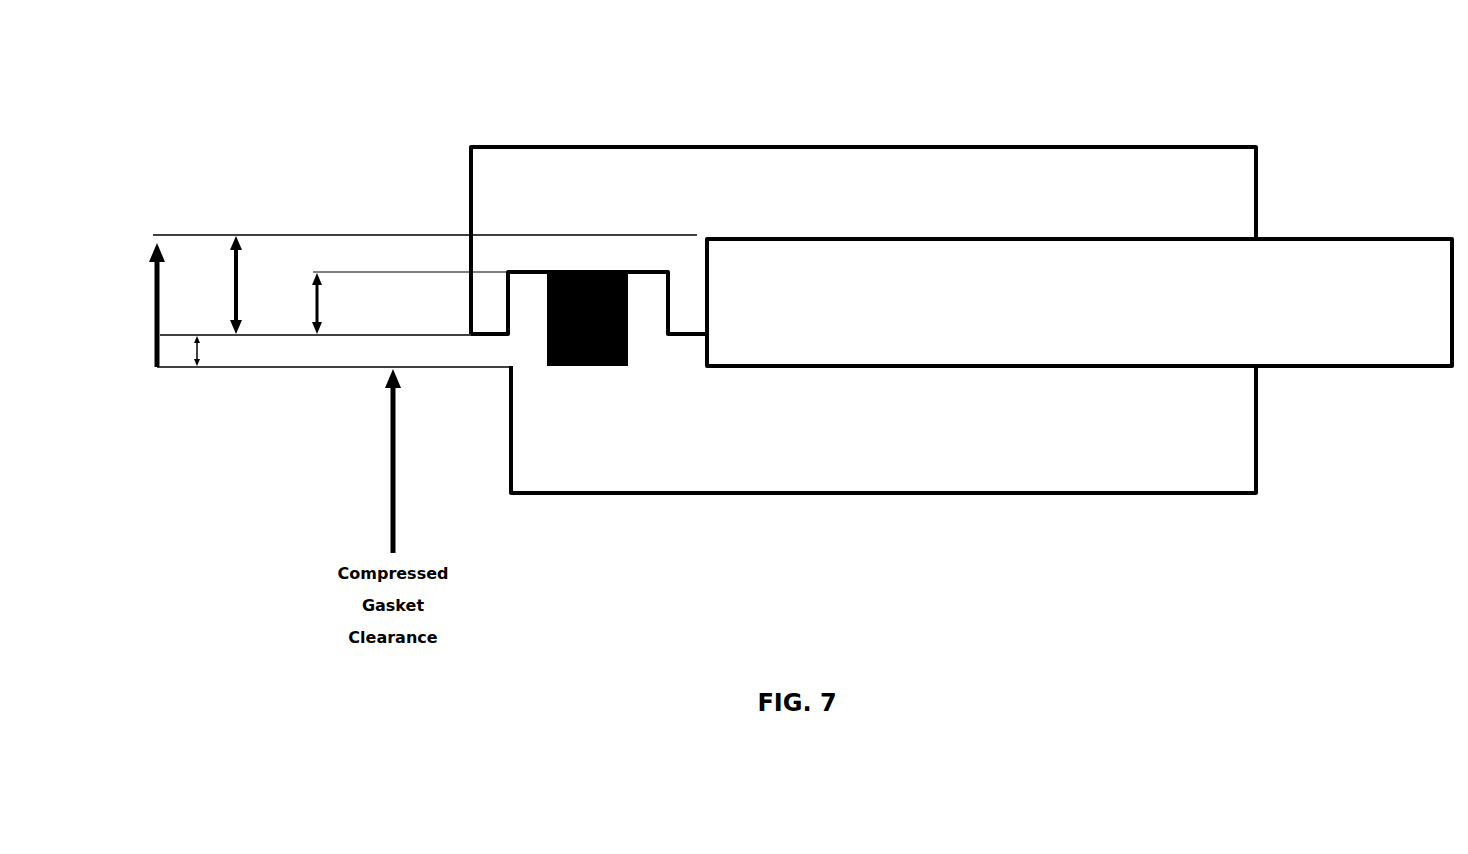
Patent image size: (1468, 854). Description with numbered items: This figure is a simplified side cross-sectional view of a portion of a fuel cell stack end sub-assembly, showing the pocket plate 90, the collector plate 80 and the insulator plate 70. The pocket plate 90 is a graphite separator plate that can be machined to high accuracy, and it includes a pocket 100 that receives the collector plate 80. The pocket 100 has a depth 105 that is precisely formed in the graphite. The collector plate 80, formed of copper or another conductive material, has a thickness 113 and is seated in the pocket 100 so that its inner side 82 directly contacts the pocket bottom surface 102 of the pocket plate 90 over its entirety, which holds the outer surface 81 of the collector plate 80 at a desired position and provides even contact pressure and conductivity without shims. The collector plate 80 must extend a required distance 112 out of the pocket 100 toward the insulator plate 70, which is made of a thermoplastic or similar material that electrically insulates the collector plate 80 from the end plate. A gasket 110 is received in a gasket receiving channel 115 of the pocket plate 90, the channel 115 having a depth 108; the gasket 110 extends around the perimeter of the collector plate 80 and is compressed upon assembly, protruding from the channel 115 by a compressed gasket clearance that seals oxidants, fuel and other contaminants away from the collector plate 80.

The insulator plate 70 is at (855, 452).
The collector plate 80 is at (1061, 322).
The outer surface of collector plate 81 is at (1176, 367).
The inner side of collector plate 82 is at (736, 240).
The pocket plate 90 is at (836, 207).
The pocket 100 is at (1148, 240).
The pocket bottom surface 102 is at (1015, 240).
The depth of pocket 105 is at (256, 285).
The depth of gasket receiving channel 108 is at (337, 304).
The gasket 110 is at (580, 366).
The required distance 112 is at (195, 345).
The thickness of collector plate 113 is at (152, 303).
The gasket receiving channel 115 is at (534, 304).